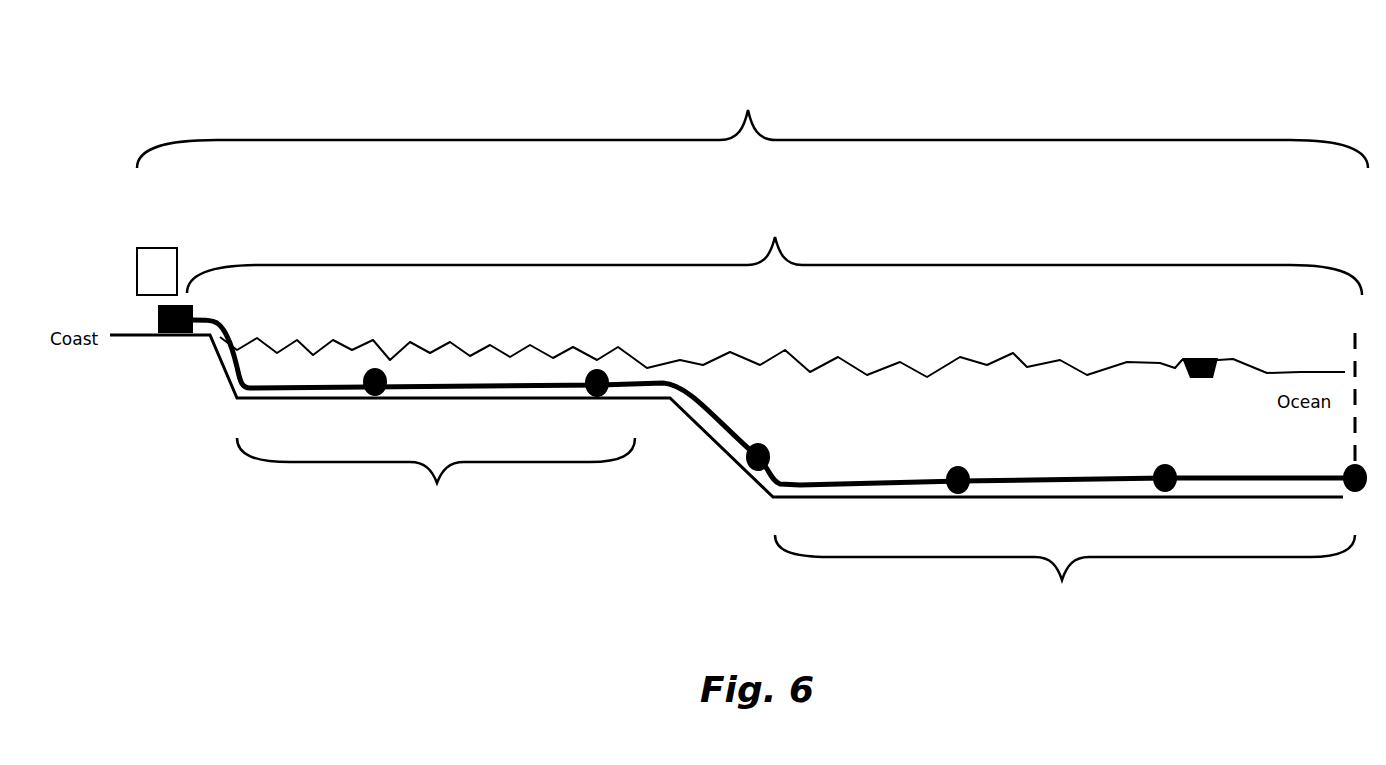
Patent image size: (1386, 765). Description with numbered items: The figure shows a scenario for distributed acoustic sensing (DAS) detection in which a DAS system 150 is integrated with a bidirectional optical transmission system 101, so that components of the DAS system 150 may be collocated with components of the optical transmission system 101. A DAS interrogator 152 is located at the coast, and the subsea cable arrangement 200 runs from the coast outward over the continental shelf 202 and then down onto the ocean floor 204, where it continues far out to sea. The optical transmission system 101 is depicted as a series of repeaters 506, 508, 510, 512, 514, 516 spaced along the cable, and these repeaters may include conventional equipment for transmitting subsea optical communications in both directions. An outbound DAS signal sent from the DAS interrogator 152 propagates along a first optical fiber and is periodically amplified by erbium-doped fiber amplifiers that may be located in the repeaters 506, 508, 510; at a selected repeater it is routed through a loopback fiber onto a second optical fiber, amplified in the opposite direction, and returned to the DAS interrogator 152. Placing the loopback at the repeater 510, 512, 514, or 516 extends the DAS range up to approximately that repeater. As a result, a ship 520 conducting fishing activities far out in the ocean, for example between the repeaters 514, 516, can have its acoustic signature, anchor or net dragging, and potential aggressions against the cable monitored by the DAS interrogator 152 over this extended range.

The DAS system 150 is at (752, 113).
The optical transmission system 101 is at (774, 240).
The DAS interrogator 152 is at (162, 255).
The undersea cable system 200 is at (795, 627).
The continental shelf 202 is at (436, 497).
The ocean floor 204 is at (1065, 595).
The repeater 506 is at (395, 380).
The repeater 508 is at (583, 383).
The repeater 510 is at (769, 447).
The repeater 512 is at (964, 469).
The repeater 514 is at (1152, 472).
The repeater 516 is at (1337, 471).
The ship 520 is at (1200, 344).